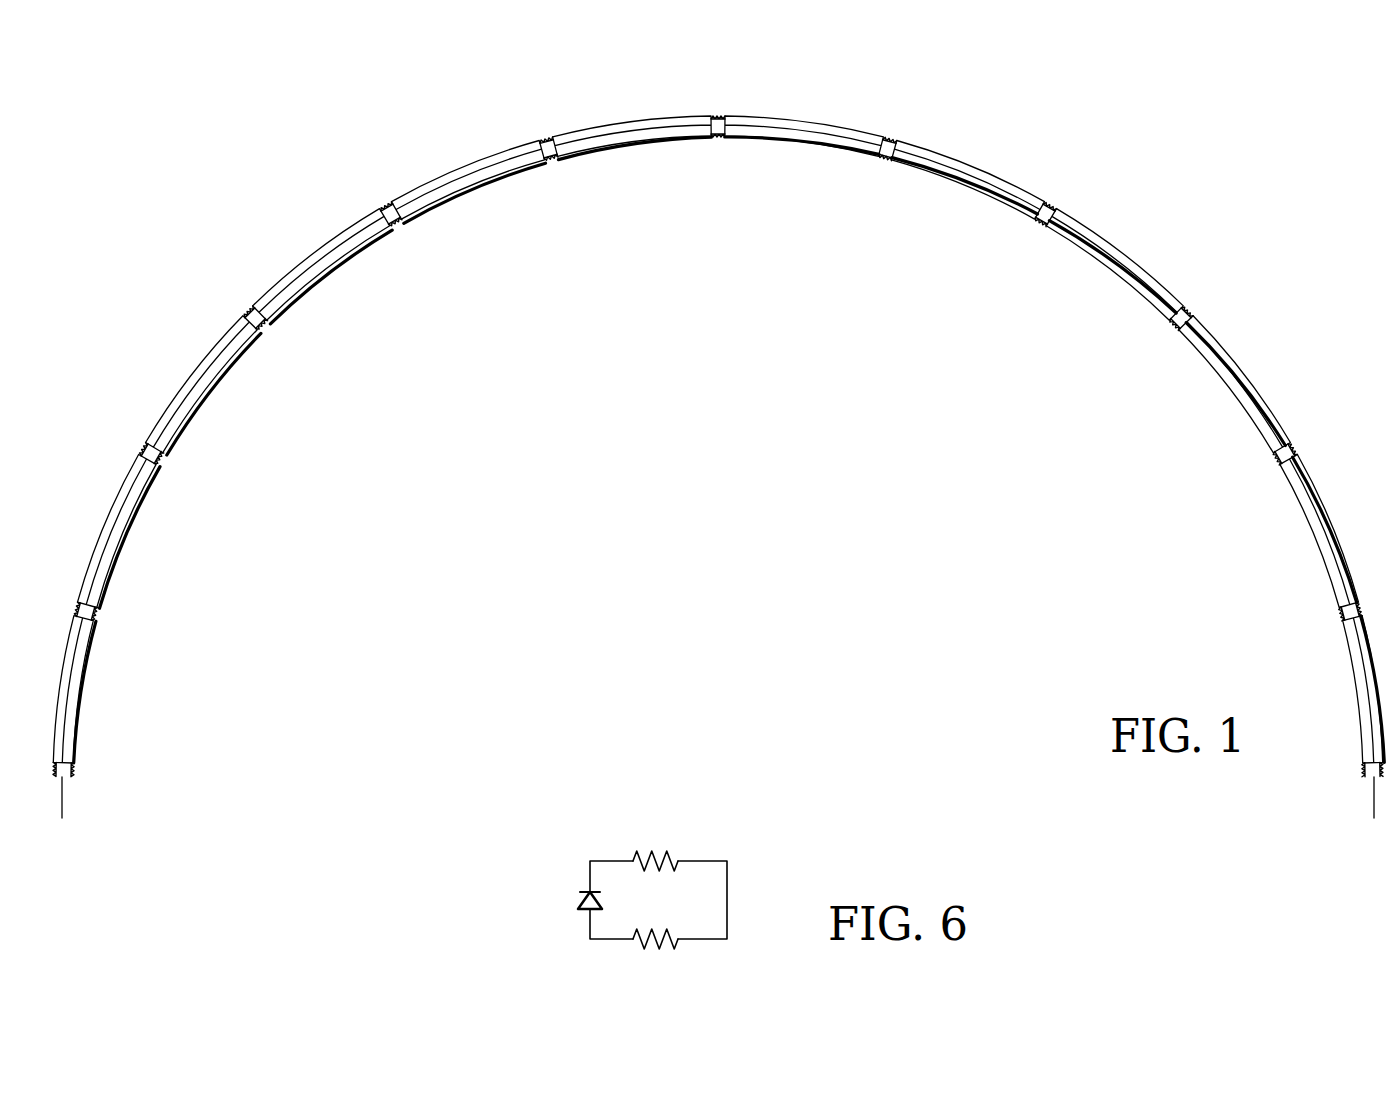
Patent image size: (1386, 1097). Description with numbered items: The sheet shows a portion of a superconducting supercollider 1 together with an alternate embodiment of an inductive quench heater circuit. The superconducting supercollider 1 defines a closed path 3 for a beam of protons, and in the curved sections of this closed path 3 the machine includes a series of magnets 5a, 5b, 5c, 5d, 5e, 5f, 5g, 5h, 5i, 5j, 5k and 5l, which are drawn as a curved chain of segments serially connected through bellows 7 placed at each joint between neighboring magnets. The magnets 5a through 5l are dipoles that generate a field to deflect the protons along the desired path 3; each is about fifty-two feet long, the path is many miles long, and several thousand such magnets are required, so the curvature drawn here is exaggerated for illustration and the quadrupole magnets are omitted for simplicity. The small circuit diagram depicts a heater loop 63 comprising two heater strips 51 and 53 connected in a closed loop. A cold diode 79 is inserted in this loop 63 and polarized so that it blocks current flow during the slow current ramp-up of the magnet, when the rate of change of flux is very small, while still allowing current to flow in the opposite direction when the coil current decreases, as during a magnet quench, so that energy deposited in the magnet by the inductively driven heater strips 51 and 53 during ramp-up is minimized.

In FIG. 1, the superconducting supercollider 1 is at (824, 325).
In FIG. 1, the closed path 3 is at (1374, 798).
In FIG. 1, the magnet 5a is at (86, 688).
In FIG. 1, the magnet 5b is at (131, 528).
In FIG. 1, the magnet 5c is at (211, 385).
In FIG. 1, the magnet 5d is at (331, 275).
In FIG. 1, the magnet 5e is at (481, 200).
In FIG. 1, the magnet 5f is at (636, 150).
In FIG. 1, the magnet 5g is at (811, 150).
In FIG. 1, the magnet 5h is at (968, 186).
In FIG. 1, the magnet 5i is at (1110, 271).
In FIG. 1, the magnet 5j is at (1230, 386).
In FIG. 1, the magnet 5k is at (1303, 536).
In FIG. 1, the magnet 5l is at (1357, 693).
In FIG. 1, the bellows 7 is at (385, 203).
In FIG. 6, the heater strip 51 is at (648, 850).
In FIG. 6, the heater strip 53 is at (652, 930).
In FIG. 6, the heater loop 63 is at (752, 890).
In FIG. 6, the cold diode 79 is at (584, 900).